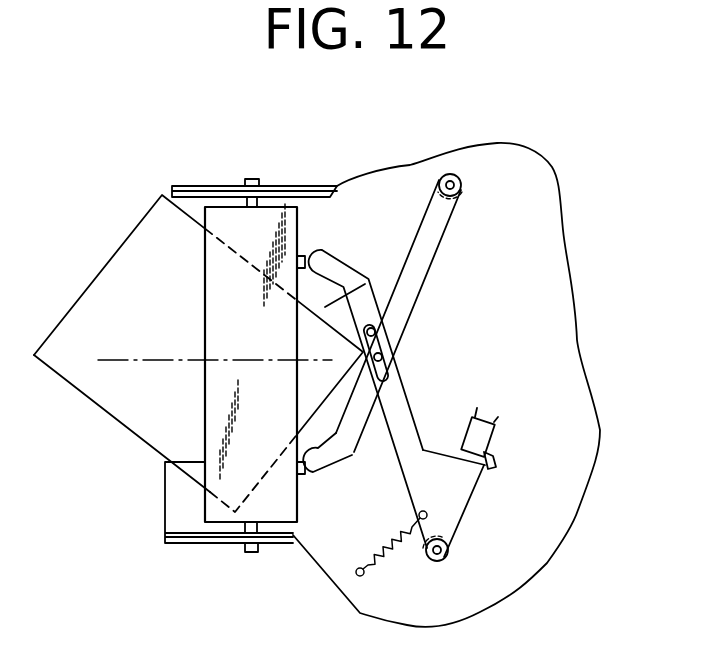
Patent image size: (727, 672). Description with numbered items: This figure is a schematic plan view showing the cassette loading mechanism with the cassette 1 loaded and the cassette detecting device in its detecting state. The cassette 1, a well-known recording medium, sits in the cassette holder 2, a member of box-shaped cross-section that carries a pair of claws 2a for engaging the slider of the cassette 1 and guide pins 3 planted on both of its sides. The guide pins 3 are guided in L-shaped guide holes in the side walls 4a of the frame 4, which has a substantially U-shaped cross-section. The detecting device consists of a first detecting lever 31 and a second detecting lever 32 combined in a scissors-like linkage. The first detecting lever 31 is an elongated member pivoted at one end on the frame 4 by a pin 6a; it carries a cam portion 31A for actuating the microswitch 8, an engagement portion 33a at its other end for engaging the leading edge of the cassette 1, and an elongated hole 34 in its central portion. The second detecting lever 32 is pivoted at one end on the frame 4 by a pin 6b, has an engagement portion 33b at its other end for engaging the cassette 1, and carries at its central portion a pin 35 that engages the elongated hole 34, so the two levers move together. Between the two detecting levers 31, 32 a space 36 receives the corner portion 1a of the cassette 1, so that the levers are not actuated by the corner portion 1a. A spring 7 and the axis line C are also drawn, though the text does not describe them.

The cassette 1 is at (130, 233).
The corner portion 1a is at (320, 350).
The cassette holder 2 is at (205, 508).
The claws 2a is at (305, 256).
The guide pins 3 is at (250, 179).
The frame 4 is at (545, 273).
The side walls 4a is at (282, 184).
The pin 6a is at (445, 553).
The pin 6b is at (462, 188).
The spring 7 is at (390, 557).
The microswitch 8 is at (493, 436).
The first detecting lever 31 is at (473, 498).
The cam portion 31A is at (432, 448).
The second detecting lever 32 is at (432, 230).
The engagement portion 33a is at (328, 257).
The engagement portion 33b is at (330, 452).
The elongated hole 34 is at (384, 323).
The pin 35 is at (384, 357).
The space 36 is at (365, 284).
The optical axis C is at (178, 360).